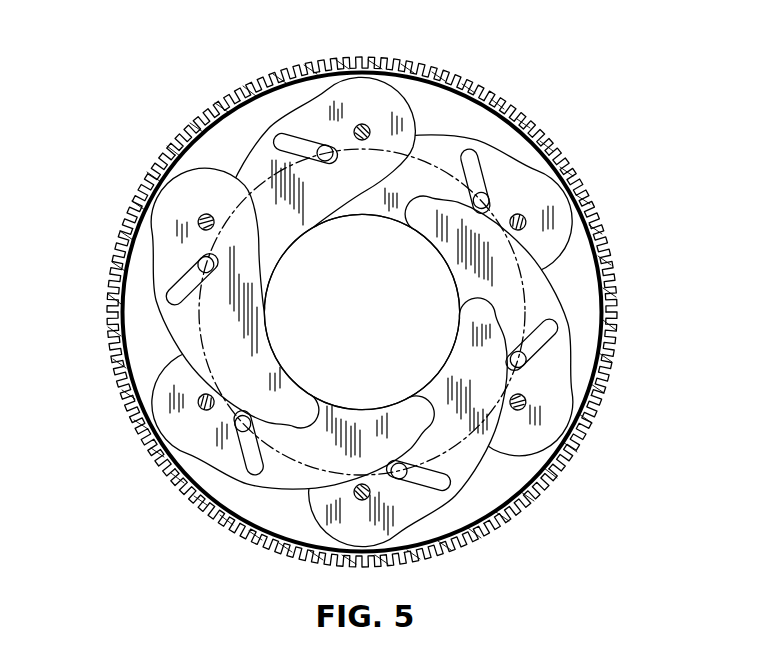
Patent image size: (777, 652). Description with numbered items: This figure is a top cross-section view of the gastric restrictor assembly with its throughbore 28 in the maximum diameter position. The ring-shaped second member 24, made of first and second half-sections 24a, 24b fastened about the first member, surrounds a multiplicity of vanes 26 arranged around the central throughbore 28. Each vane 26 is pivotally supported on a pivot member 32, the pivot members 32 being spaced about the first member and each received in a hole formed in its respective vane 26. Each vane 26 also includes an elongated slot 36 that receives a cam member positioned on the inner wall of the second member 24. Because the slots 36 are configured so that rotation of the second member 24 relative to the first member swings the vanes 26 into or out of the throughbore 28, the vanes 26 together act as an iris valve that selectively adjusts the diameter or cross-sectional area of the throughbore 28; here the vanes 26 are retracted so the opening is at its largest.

The second member 24 is at (369, 311).
The first half-section 24a is at (158, 176).
The second half-section 24b is at (563, 460).
The vane 26 is at (403, 110).
The throughbore 28 is at (417, 328).
The pivot member 32 is at (525, 220).
The elongated slot 36 is at (312, 138).